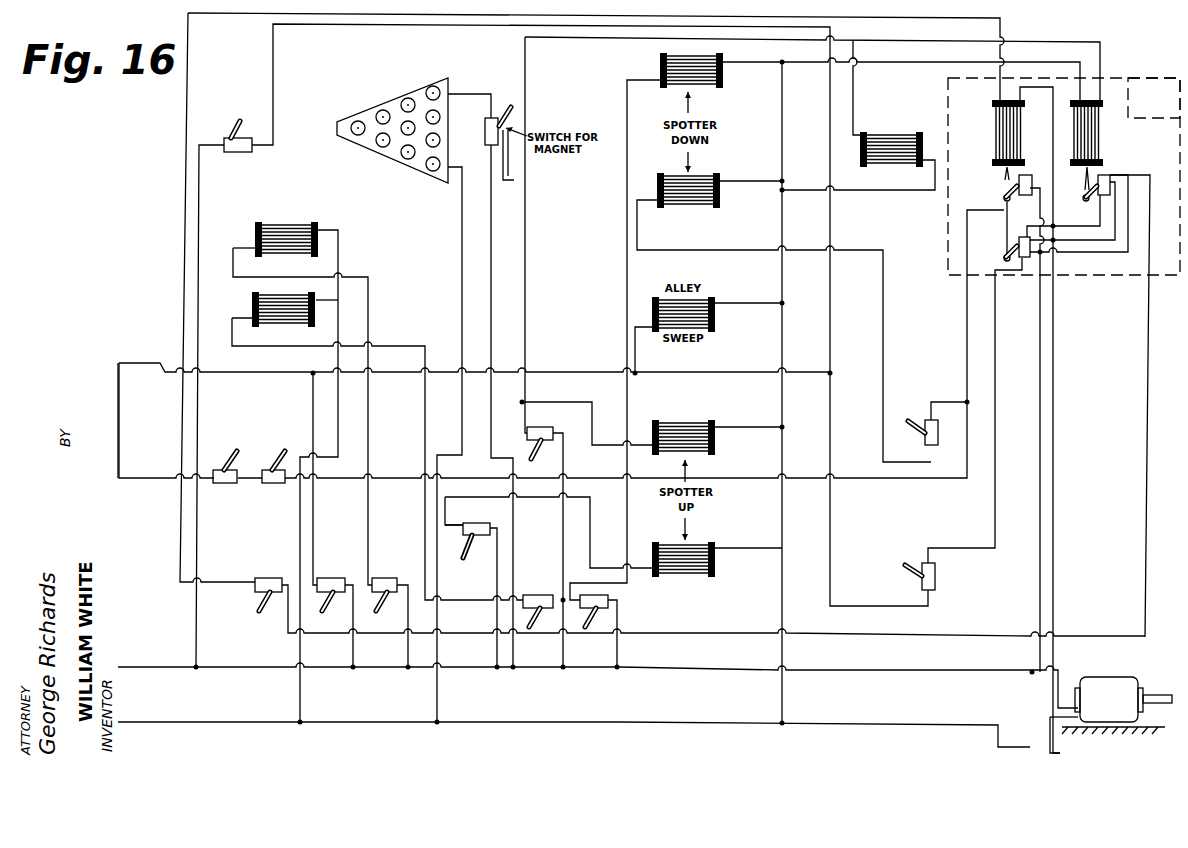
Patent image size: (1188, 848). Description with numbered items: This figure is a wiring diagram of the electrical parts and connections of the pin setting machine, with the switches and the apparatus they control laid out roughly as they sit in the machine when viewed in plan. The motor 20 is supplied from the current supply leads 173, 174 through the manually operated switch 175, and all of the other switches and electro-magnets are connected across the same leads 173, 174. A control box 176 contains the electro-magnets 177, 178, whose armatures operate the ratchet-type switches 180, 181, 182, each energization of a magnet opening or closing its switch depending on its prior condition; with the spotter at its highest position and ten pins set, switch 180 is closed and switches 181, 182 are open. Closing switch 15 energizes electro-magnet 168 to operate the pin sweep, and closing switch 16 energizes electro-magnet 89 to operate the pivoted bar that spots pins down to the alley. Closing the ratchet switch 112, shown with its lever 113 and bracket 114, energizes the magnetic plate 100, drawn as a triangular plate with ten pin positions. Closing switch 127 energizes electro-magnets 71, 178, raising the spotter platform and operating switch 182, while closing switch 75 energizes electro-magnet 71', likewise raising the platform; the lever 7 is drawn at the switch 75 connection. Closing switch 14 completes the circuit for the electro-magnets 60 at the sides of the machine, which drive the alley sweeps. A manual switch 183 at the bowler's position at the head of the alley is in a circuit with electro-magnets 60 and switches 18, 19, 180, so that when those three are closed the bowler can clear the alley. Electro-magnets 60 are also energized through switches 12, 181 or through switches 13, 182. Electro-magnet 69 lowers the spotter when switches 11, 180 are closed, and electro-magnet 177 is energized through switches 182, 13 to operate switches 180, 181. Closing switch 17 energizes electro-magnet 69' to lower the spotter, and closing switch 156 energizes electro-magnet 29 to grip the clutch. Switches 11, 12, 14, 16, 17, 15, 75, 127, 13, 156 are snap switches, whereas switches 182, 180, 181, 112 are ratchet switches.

The switch 7 is at (476, 540).
The switch 11 is at (930, 420).
The switch 12 is at (928, 563).
The switch 13 is at (255, 590).
The switch 14 is at (330, 578).
The switch 15 is at (386, 578).
The switch 16 is at (533, 595).
The switch 17 is at (596, 612).
The switch 18 is at (230, 483).
The switch 19 is at (277, 483).
The motor 20 is at (1100, 677).
The electro-magnet 29 is at (920, 128).
The electro-magnets 60 is at (715, 328).
The electro-magnet 69 is at (703, 193).
The electro-magnet 69' is at (707, 76).
The electro-magnet 71 is at (701, 439).
The electro-magnet 71' is at (703, 559).
The switch 75 is at (463, 529).
The electro-magnet 89 is at (252, 300).
The magnetic plate 100 is at (381, 98).
The switch 112 is at (485, 140).
The switch lever 113 is at (511, 107).
The switch bracket 114 is at (514, 180).
The switch 127 is at (540, 427).
The switch 156 is at (252, 150).
The electro-magnet 168 is at (255, 238).
The current supply lead 173 is at (132, 667).
The current supply lead 174 is at (132, 722).
The manually operated switch 175 is at (1030, 747).
The control box 176 is at (1164, 78).
The electro-magnet 177 is at (992, 138).
The electro-magnet 178 is at (1103, 135).
The switch 180 is at (1004, 186).
The switch 181 is at (1004, 240).
The switch 182 is at (1110, 176).
The manual switch 183 is at (125, 357).